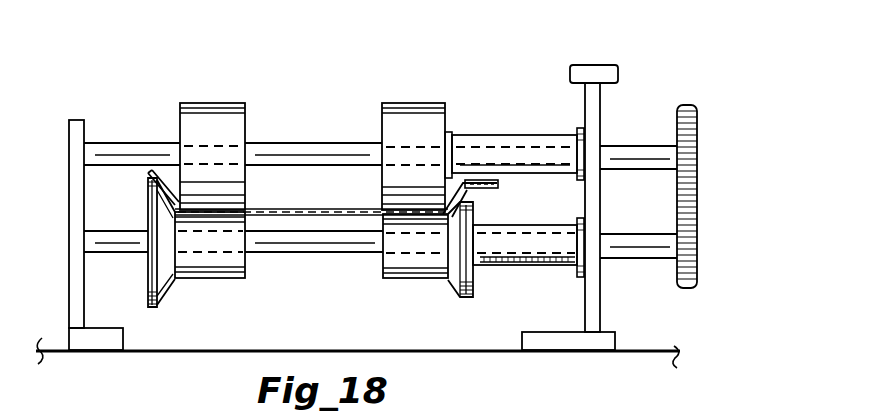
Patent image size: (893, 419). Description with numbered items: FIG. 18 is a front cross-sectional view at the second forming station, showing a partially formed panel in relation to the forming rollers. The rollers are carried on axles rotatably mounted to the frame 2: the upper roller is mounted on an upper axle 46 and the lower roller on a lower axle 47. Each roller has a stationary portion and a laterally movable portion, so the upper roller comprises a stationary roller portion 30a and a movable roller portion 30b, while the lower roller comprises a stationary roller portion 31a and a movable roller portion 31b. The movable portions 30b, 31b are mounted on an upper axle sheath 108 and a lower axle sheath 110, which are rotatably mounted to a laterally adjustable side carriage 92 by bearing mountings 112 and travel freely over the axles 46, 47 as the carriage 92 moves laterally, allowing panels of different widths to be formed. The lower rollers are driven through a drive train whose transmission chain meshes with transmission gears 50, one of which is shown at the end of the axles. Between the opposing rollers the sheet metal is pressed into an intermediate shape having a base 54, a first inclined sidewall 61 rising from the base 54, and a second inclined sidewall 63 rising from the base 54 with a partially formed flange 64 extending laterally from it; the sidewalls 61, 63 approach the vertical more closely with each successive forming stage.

The frame 2 is at (77, 119).
The upper axle 46 is at (318, 151).
The lower axle 47 is at (342, 240).
The stationary roller portion of second upper roller 30a is at (233, 126).
The laterally movable roller portion of second upper roller 30b is at (400, 118).
The stationary roller portion of second lower roller 31a is at (222, 268).
The laterally movable roller portion of second lower roller 31b is at (426, 279).
The base 54 is at (312, 217).
The first inclined sidewall 61 is at (163, 172).
The second inclined sidewall 63 is at (467, 187).
The partially formed flange 64 is at (481, 180).
The upper axle sheath 108 is at (537, 135).
The lower axle sheath 110 is at (547, 262).
The bearing mounting 112 is at (586, 126).
The side carriage 92 is at (592, 86).
The transmission gear 50 is at (698, 147).